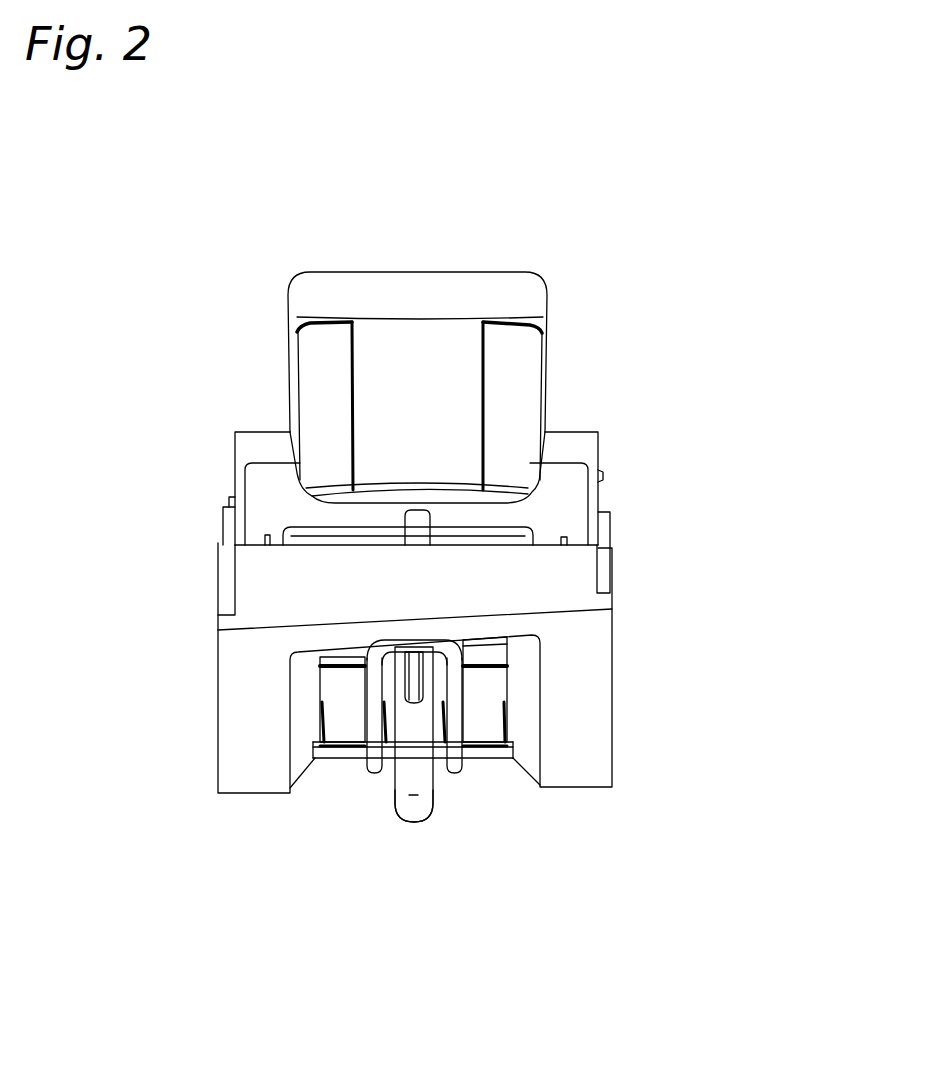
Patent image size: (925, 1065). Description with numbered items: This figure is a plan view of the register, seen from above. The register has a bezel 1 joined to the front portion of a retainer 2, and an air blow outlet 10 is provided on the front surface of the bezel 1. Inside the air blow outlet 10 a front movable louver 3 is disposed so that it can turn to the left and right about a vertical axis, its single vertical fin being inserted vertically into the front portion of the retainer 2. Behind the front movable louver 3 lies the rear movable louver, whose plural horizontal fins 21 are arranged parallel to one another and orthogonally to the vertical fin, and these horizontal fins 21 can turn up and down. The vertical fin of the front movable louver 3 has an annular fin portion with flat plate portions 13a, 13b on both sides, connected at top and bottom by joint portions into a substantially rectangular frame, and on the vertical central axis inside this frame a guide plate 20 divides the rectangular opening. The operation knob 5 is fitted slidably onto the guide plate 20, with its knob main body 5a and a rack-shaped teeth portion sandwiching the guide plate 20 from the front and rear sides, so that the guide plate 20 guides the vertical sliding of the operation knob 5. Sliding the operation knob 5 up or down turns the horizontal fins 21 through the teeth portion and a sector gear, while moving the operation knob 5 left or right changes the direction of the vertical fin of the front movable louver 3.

The bezel 1 is at (595, 743).
The retainer 2 is at (517, 288).
The front movable louver 3 is at (477, 700).
The operation knob 5 is at (383, 805).
The knob main body 5a is at (408, 822).
The air blow outlet 10 is at (516, 760).
The flat plate portion 13a is at (453, 773).
The flat plate portion 13b is at (375, 773).
The guide plate 20 is at (425, 652).
The horizontal fin 21 is at (343, 653).